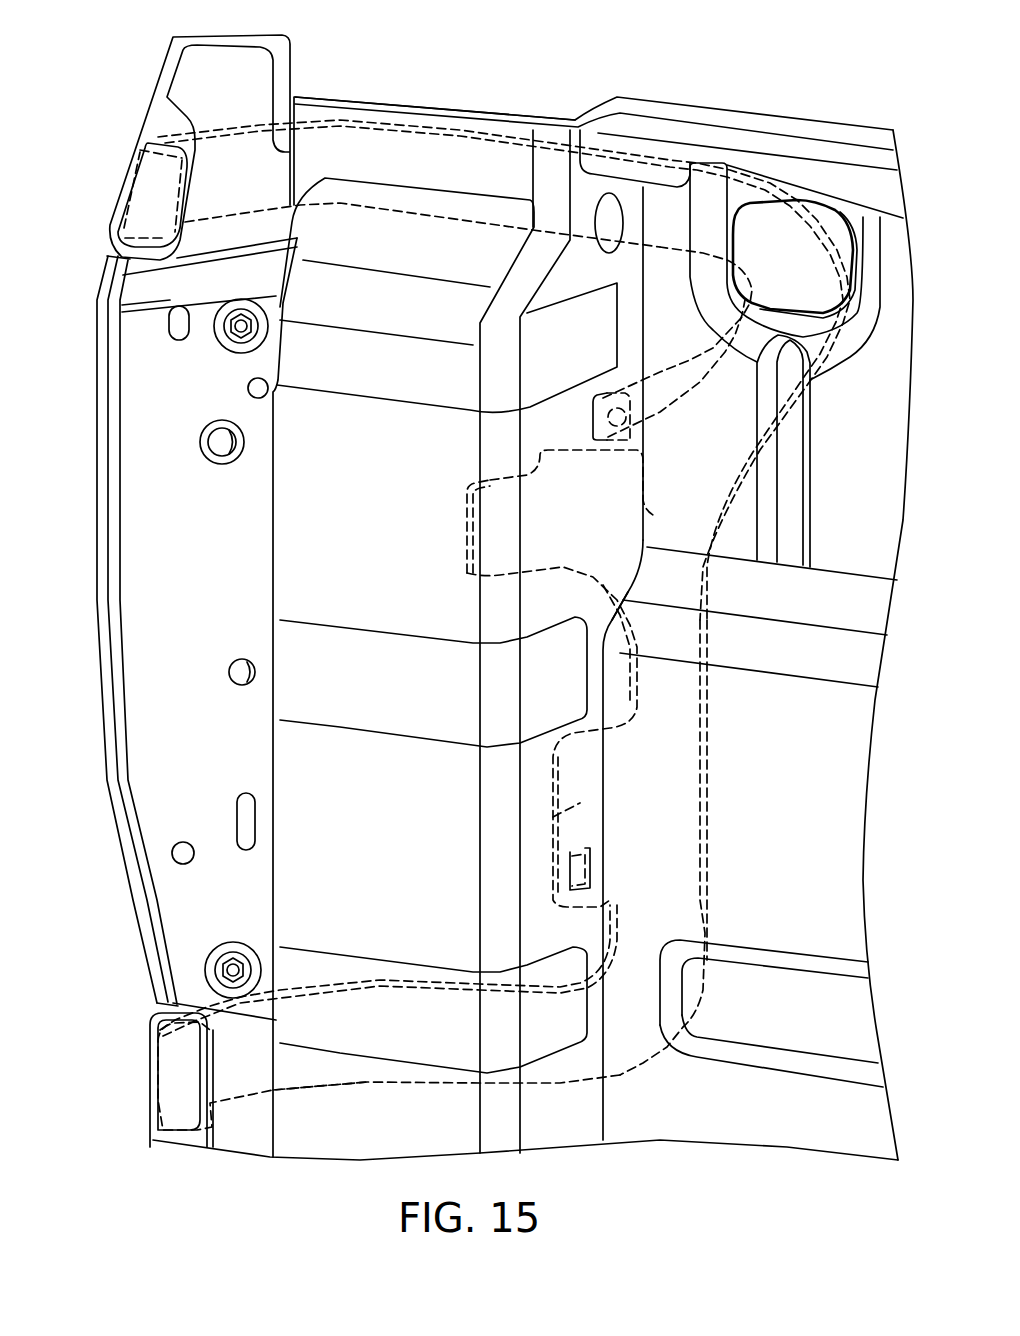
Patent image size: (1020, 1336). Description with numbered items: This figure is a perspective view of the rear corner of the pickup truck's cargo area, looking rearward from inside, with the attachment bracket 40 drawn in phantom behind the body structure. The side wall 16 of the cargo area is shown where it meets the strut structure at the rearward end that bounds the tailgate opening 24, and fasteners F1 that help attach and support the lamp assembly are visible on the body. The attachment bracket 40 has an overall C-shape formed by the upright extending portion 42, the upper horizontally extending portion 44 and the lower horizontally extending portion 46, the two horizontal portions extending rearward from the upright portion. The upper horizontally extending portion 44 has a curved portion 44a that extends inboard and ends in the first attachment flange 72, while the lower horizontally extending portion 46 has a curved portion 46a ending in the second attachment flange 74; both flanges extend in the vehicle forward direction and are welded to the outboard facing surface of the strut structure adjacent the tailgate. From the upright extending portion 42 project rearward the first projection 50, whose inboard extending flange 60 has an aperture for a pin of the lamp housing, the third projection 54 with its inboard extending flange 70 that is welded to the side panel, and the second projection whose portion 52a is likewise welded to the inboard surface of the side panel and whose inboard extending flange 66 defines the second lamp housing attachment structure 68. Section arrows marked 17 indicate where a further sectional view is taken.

The side wall 16 is at (717, 103).
The section line 17 is at (57, 807).
The tailgate opening 24 is at (195, 908).
The attachment bracket 40 is at (428, 112).
The upright extending portion 42 is at (673, 703).
The upper horizontally extending portion 44 is at (480, 160).
The curved portion 44a is at (325, 120).
The lower horizontally extending portion 46 is at (363, 1070).
The curved portion 46a is at (317, 1087).
The first projection 50 is at (667, 390).
The portion of the second projection 52a is at (580, 765).
The third projection 54 is at (560, 533).
The inboard extending flange 60 is at (600, 425).
The inboard extending flange 66 is at (553, 817).
The second lamp housing attachment structure 68 is at (573, 880).
The inboard extending flange 70 is at (495, 527).
The first attachment flange 72 is at (153, 193).
The second attachment flange 74 is at (180, 1090).
The fastener F1 is at (232, 330).